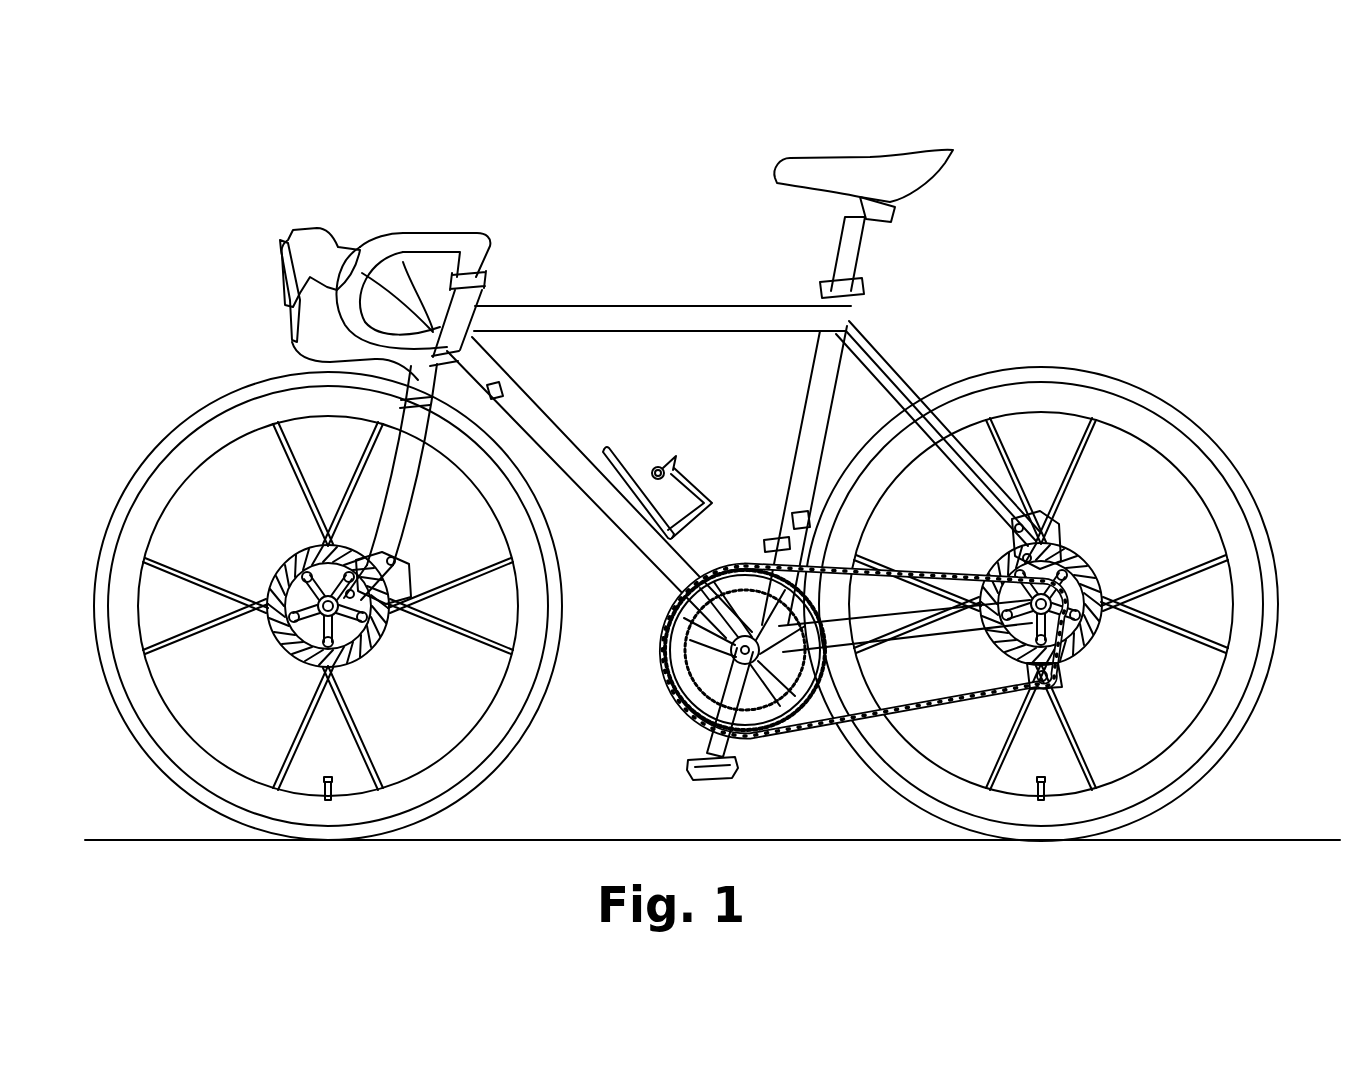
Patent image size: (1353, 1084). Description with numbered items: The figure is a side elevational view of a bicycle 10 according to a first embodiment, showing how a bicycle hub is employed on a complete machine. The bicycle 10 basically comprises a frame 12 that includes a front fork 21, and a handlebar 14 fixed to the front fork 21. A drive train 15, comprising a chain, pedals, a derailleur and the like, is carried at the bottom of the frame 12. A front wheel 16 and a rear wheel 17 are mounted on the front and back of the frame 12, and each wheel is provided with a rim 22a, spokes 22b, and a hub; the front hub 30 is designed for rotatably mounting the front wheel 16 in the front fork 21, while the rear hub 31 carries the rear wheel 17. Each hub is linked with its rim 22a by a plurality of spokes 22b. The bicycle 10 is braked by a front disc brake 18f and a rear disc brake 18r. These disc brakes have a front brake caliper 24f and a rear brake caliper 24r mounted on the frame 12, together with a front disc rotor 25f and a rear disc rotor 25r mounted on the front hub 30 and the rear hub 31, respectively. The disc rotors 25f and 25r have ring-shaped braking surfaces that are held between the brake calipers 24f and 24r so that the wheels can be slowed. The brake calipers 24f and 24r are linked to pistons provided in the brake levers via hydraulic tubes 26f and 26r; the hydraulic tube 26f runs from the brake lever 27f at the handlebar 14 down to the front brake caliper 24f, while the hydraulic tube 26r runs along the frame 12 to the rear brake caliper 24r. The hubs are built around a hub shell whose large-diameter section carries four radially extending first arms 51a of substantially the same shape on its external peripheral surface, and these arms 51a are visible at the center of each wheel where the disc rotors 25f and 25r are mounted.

The bicycle 10 is at (550, 183).
The frame 12 is at (645, 292).
The handlebar 14 is at (443, 232).
The drive train 15 is at (733, 550).
The front wheel 16 is at (564, 471).
The rear wheel 17 is at (1236, 429).
The front disc brake 18f is at (395, 635).
The rear disc brake 18r is at (1035, 500).
The front fork 21 is at (425, 425).
The rim 22a is at (219, 437).
The spokes 22b is at (322, 518).
The front brake caliper 24f is at (388, 580).
The rear brake caliper 24r is at (1050, 533).
The front disc rotor 25f is at (362, 672).
The rear disc rotor 25r is at (1073, 663).
The hydraulic tube 26f is at (303, 362).
The hydraulic tube 26r is at (904, 371).
The brake lever 27f is at (310, 240).
The front hub 30 is at (290, 651).
The rear hub 31 is at (1093, 639).
The first arms 51a is at (262, 623).